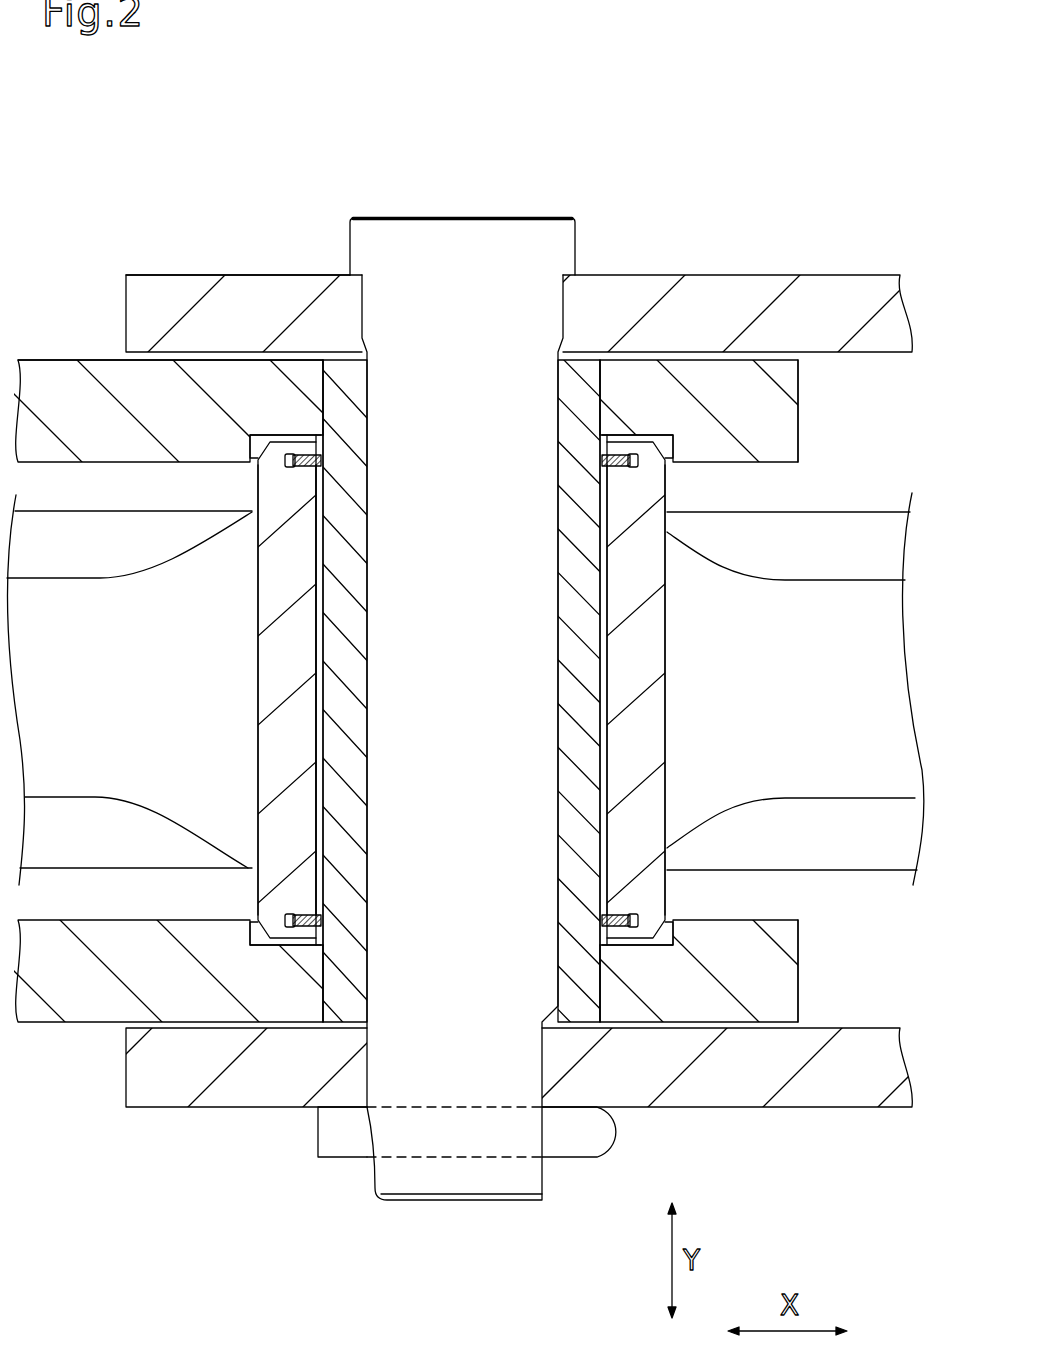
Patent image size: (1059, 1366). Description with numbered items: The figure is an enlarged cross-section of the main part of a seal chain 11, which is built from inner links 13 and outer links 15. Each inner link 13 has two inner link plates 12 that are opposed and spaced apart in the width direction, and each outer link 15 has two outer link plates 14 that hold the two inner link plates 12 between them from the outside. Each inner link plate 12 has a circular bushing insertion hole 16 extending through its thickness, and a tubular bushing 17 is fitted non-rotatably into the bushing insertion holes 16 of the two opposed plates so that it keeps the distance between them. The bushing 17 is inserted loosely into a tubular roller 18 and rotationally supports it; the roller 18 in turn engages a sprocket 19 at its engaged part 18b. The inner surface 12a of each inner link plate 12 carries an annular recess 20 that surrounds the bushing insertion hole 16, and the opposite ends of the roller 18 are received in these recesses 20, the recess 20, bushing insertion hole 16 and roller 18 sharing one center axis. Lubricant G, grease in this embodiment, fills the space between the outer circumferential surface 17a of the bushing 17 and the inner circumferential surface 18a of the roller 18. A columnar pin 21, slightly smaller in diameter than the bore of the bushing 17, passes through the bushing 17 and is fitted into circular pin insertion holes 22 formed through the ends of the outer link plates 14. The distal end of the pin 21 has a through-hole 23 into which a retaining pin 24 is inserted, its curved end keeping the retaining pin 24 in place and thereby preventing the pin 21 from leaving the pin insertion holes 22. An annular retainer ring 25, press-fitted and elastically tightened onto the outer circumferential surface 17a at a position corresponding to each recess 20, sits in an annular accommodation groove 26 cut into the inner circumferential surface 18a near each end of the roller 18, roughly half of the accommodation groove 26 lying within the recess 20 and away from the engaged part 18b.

The seal chain 11 is at (707, 104).
The inner link plate 12 is at (45, 360).
The inner surface 12a is at (742, 462).
The inner link 13 is at (98, 354).
The outer link plate 14 is at (160, 275).
The outer link 15 is at (199, 271).
The bushing insertion hole 16 is at (602, 425).
The bushing 17 is at (565, 658).
The outer circumferential surface of the bushing 17a is at (603, 595).
The roller 18 is at (650, 775).
The inner circumferential surface of the roller 18a is at (607, 673).
The engaged part 18b is at (650, 723).
The sprocket 19 is at (850, 510).
The recess 20 is at (283, 437).
The pin 21 is at (452, 217).
The pin insertion hole 22 is at (558, 310).
The through-hole 23 is at (405, 1100).
The retaining pin 24 is at (570, 1158).
The retainer ring 25 is at (617, 467).
The accommodation groove 26 is at (633, 466).
The lubricant G is at (314, 652).